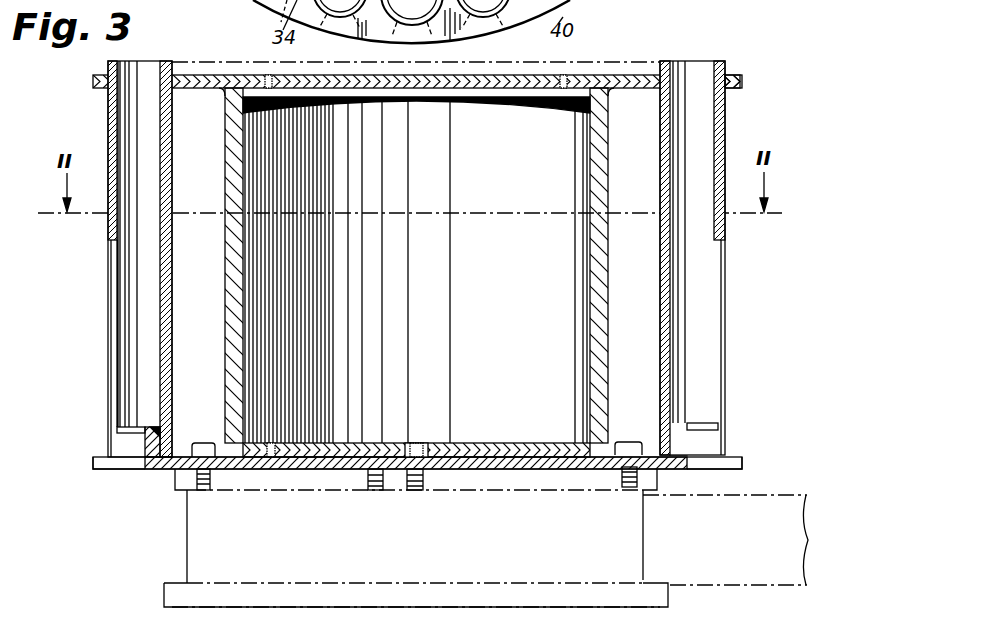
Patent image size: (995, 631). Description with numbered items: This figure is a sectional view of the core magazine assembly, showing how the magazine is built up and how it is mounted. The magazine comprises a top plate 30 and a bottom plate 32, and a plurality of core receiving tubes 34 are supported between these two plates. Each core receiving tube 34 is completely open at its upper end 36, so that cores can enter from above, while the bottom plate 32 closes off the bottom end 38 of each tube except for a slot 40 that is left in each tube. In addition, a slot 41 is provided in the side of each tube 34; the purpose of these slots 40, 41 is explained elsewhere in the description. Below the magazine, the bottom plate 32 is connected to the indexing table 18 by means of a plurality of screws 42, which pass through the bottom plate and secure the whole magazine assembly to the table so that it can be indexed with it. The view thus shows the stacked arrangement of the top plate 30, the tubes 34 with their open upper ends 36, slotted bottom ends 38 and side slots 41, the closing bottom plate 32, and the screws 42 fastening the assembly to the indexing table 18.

The indexing table 18 is at (197, 545).
The top plate 30 is at (203, 88).
The bottom plate 32 is at (180, 458).
The core receiving tube 34 is at (703, 72).
The upper end 36 is at (143, 63).
The bottom end 38 is at (178, 447).
The slot 40 is at (105, 466).
The slot 41 is at (112, 297).
The screw 42 is at (210, 478).